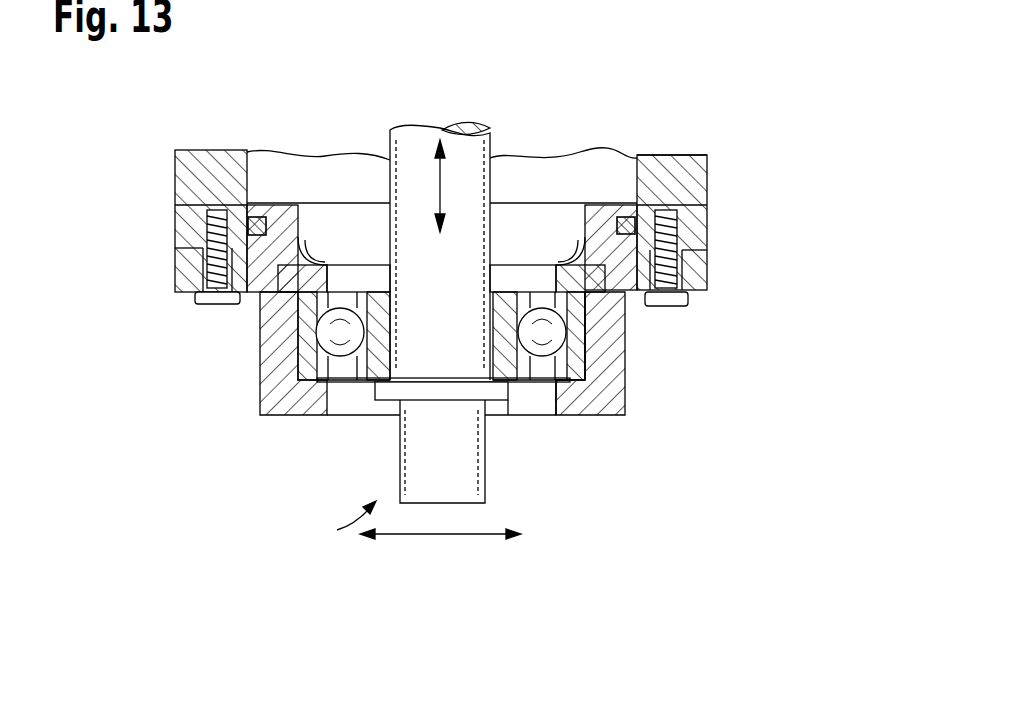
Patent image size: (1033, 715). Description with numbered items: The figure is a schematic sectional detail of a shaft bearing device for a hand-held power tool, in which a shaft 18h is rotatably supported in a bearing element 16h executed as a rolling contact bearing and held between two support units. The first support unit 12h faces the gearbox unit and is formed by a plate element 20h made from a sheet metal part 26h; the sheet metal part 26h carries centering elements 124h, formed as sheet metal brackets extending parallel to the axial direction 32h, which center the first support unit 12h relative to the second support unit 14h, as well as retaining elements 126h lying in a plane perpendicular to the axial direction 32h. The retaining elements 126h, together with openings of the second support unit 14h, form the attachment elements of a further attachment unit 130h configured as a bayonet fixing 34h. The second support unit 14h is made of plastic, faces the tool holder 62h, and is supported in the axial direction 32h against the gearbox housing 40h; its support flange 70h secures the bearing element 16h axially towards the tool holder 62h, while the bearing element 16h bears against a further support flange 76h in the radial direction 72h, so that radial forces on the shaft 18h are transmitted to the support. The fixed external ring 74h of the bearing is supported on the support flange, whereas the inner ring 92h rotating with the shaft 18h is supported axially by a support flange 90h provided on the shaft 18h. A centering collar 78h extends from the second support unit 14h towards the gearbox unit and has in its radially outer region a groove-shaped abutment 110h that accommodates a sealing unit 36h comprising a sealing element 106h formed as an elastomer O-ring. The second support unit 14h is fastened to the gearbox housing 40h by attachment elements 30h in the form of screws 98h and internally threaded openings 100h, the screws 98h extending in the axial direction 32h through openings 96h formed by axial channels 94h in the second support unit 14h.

The first support unit 12h is at (520, 263).
The second support unit 14h is at (176, 258).
The bearing element 16h is at (323, 382).
The shaft 18h is at (420, 143).
The plate element 20h is at (345, 273).
The sheet metal part 26h is at (355, 282).
The attachment elements 30h is at (668, 207).
The axial direction 32h is at (445, 185).
The bayonet fixing 34h is at (615, 298).
The sealing unit 36h is at (236, 175).
The gearbox housing 40h is at (705, 158).
The tool holder 62h is at (333, 532).
The support flange 70h is at (594, 403).
The radial direction 72h is at (440, 538).
The fixed external ring 74h is at (313, 358).
The further support flange 76h is at (270, 343).
The centering collar 78h is at (258, 212).
The support flange 90h is at (490, 393).
The inner ring 92h is at (502, 350).
The axial channels 94h is at (680, 260).
The openings 96h is at (682, 270).
The screws 98h is at (688, 304).
The openings 100h is at (690, 205).
The sealing element 106h is at (208, 214).
The groove-shaped abutment 110h is at (625, 217).
The centering elements 124h is at (593, 215).
The retaining elements 126h is at (593, 320).
The further attachment unit 130h is at (618, 385).